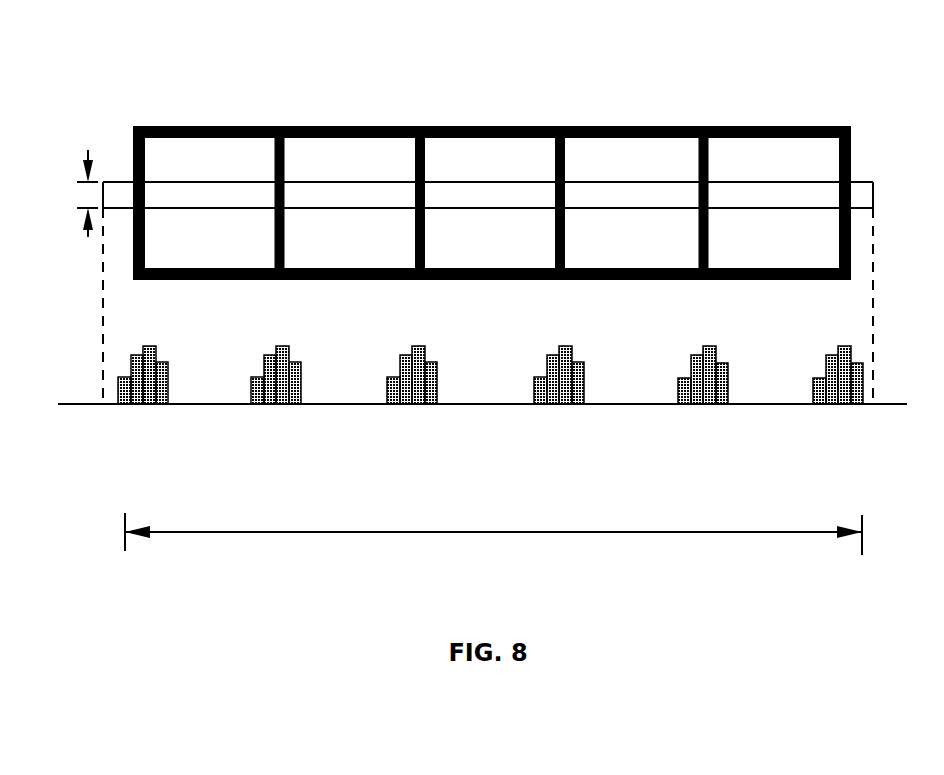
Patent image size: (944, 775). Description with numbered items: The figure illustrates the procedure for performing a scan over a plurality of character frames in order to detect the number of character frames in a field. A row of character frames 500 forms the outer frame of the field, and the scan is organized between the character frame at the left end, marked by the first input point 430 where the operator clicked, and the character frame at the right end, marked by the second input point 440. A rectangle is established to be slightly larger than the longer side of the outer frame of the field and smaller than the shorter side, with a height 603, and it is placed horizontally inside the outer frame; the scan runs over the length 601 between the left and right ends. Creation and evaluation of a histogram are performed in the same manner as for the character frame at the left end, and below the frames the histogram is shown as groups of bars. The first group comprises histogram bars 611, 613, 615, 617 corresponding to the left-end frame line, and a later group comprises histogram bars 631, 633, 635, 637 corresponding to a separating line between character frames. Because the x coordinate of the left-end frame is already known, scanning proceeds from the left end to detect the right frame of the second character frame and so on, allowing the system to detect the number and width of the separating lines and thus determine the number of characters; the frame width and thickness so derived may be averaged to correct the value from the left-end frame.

The character frame 500 is at (455, 127).
The first alignment mark 430 is at (212, 153).
The second alignment mark 440 is at (775, 213).
The strip width 603 is at (65, 193).
The scan length 601 is at (493, 538).
The first intensity bar 611 is at (132, 406).
The second intensity bar 613 is at (138, 406).
The third intensity bar 615 is at (145, 406).
The fourth intensity bar 617 is at (151, 406).
The first intensity bar of third group 631 is at (397, 406).
The second intensity bar of third group 633 is at (407, 406).
The third intensity bar of third group 635 is at (417, 406).
The fourth intensity bar of third group 637 is at (424, 406).